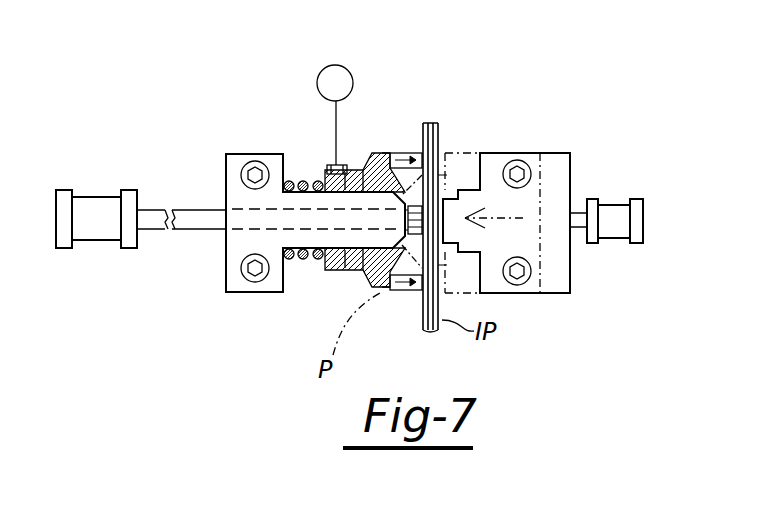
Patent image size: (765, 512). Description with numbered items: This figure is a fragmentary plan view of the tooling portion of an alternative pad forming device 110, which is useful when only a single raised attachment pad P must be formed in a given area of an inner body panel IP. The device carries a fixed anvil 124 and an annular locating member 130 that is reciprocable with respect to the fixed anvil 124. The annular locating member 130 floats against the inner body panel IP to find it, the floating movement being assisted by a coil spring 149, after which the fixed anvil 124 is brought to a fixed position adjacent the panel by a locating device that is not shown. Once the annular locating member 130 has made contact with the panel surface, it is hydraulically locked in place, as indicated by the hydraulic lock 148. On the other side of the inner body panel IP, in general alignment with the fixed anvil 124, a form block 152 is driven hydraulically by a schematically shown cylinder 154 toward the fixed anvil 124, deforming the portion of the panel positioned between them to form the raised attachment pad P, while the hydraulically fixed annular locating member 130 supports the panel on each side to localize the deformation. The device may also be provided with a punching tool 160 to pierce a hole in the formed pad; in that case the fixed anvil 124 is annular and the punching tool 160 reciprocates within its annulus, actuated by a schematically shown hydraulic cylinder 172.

The pad forming device 110 is at (403, 88).
The fixed anvil 124 is at (392, 170).
The annular locating member 130 is at (353, 170).
The hydraulic lock 148 is at (334, 64).
The coil spring 149 is at (306, 180).
The form block 152 is at (453, 200).
The cylinder 154 is at (615, 200).
The punching tool 160 is at (188, 232).
The hydraulic cylinder 172 is at (98, 196).